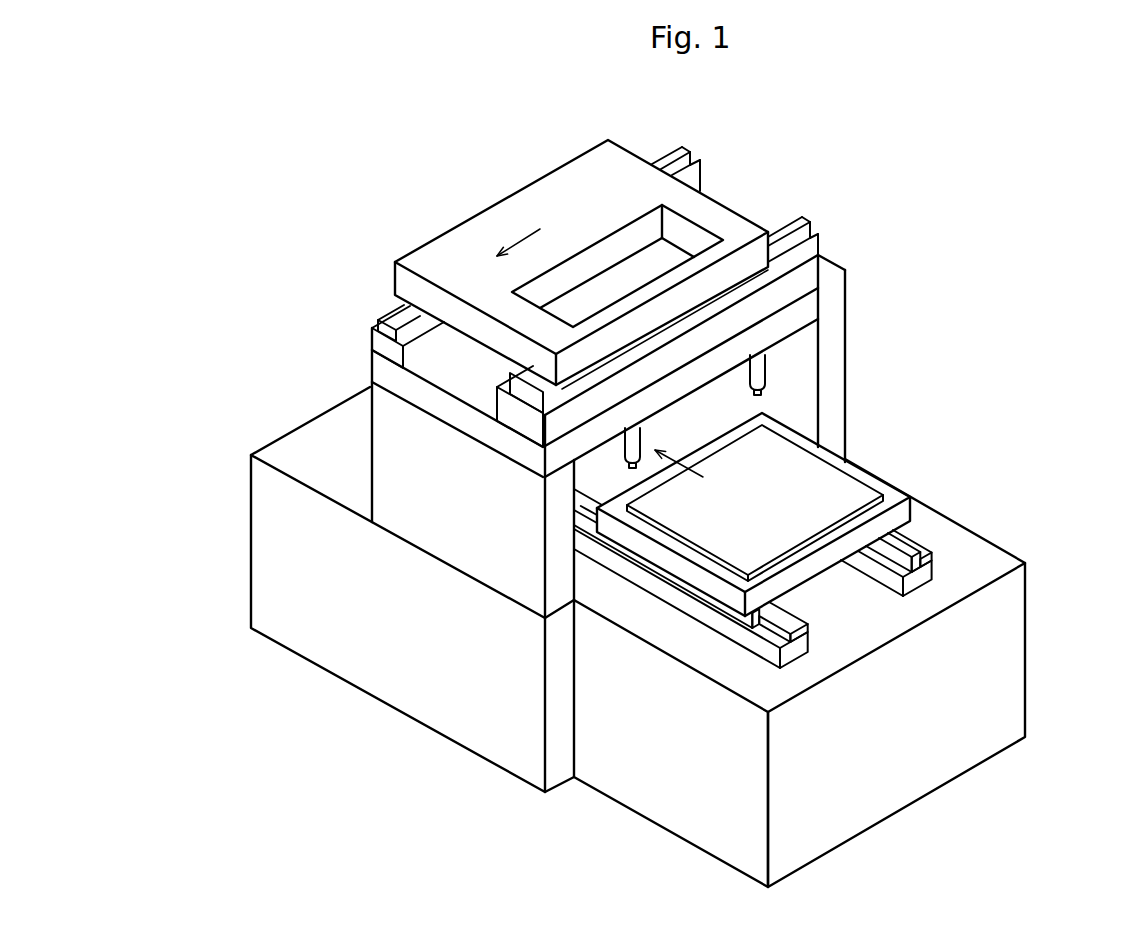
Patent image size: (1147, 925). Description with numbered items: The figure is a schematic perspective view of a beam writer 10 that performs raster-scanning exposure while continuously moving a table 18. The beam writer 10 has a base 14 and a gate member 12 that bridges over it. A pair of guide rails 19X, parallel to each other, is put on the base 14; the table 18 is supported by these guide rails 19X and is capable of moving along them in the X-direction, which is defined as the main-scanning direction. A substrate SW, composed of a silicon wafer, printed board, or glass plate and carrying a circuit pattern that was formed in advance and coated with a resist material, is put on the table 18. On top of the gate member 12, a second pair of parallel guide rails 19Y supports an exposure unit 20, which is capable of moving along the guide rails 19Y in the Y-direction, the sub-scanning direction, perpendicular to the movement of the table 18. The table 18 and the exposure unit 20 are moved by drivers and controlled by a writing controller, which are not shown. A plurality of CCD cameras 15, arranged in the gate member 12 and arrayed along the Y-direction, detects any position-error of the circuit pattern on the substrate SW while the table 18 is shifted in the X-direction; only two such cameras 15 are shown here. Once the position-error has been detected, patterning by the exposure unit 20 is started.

The beam writer 10 is at (232, 244).
The gate member 12 is at (846, 320).
The base 14 is at (997, 545).
The CCD cameras 15 is at (753, 372).
The table 18 is at (853, 455).
The guide rails 19X is at (810, 648).
The guide rails 19Y is at (690, 150).
The exposure unit 20 is at (568, 162).
The substrate SW is at (852, 493).